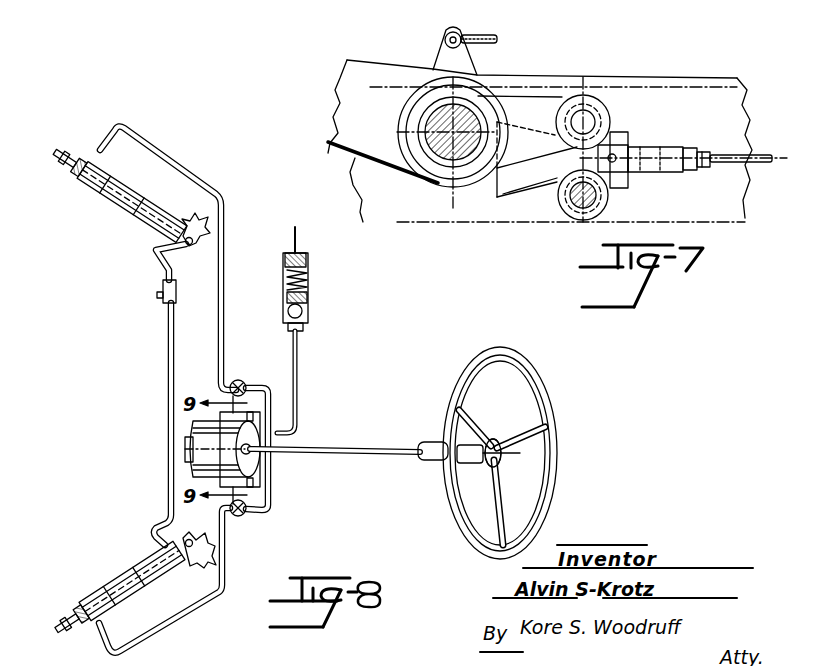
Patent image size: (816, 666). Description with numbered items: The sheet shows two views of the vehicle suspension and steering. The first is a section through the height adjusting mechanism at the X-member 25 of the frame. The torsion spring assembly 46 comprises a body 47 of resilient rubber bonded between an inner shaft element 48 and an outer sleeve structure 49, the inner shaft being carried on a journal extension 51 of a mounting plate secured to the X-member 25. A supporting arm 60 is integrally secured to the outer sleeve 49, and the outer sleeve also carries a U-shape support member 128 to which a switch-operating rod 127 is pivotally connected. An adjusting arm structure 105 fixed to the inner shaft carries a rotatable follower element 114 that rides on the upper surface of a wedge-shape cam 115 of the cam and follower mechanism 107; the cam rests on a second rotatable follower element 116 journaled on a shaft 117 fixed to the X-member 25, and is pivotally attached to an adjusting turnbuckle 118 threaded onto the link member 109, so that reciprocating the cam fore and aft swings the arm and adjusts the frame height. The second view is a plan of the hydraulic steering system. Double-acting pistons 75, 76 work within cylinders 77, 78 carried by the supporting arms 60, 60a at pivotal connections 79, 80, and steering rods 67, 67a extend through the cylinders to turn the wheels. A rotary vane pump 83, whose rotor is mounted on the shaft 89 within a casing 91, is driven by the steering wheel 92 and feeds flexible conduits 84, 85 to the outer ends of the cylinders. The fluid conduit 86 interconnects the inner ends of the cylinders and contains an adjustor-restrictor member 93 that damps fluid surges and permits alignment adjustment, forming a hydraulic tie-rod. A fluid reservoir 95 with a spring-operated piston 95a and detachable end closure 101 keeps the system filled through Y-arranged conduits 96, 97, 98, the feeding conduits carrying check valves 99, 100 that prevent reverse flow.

In FIG. 7, the X-member 25 is at (673, 76).
In FIG. 7, the torsion spring assembly 46 is at (398, 147).
In FIG. 7, the body of resilient rubber 47 is at (420, 170).
In FIG. 7, the inner shaft element 48 is at (435, 175).
In FIG. 7, the outer sleeve structure 49 is at (448, 195).
In FIG. 7, the journal extension 51 is at (437, 118).
In FIG. 7, the supporting arm 60 is at (380, 43).
In FIG. 8, the supporting arm 60 is at (203, 564).
In FIG. 8, the supporting arm 60a is at (208, 227).
In FIG. 8, the steering rod 67 is at (58, 623).
In FIG. 8, the steering rod 67a is at (63, 158).
In FIG. 8, the double-acting piston 75 is at (133, 577).
In FIG. 8, the double-acting piston 76 is at (123, 218).
In FIG. 8, the cylinder 77 is at (95, 590).
In FIG. 8, the cylinder 78 is at (150, 232).
In FIG. 8, the pivotal connection 79 is at (197, 243).
In FIG. 8, the pivotal connection 80 is at (170, 520).
In FIG. 8, the pump 83 is at (253, 462).
In FIG. 8, the flexible conduit 84 is at (157, 632).
In FIG. 8, the flexible conduit 85 is at (219, 358).
In FIG. 8, the fluid conduit 86 is at (169, 352).
In FIG. 8, the shaft 89 is at (323, 449).
In FIG. 8, the casing 91 is at (193, 438).
In FIG. 8, the steering wheel 92 is at (470, 382).
In FIG. 8, the adjustor-restrictor member 93 is at (167, 292).
In FIG. 8, the fluid reservoir 95 is at (307, 309).
In FIG. 8, the spring-operated piston 95a is at (307, 292).
In FIG. 8, the conduit 96 is at (298, 355).
In FIG. 8, the fluid-feeding conduit 97 is at (268, 387).
In FIG. 8, the fluid-feeding conduit 98 is at (267, 513).
In FIG. 8, the check valve 99 is at (237, 517).
In FIG. 8, the check valve 100 is at (243, 380).
In FIG. 8, the detachable end closure 101 is at (307, 254).
In FIG. 7, the adjusting arm structure 105 is at (528, 105).
In FIG. 7, the cam and follower mechanism 107 is at (647, 186).
In FIG. 7, the link member 109 is at (750, 166).
In FIG. 7, the rotatable follower element 114 is at (592, 100).
In FIG. 7, the cam 115 is at (500, 200).
In FIG. 7, the rotatable follower element 116 is at (567, 212).
In FIG. 7, the shaft 117 is at (575, 222).
In FIG. 7, the adjusting turnbuckle 118 is at (657, 150).
In FIG. 7, the switch-operating rod 127 is at (490, 37).
In FIG. 7, the U-shape support member 128 is at (443, 53).